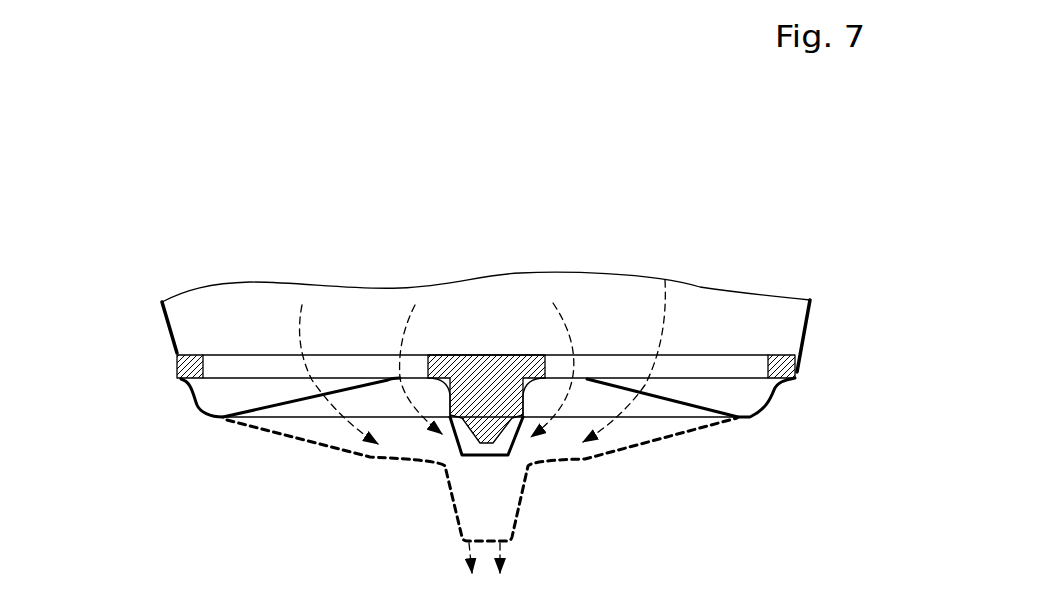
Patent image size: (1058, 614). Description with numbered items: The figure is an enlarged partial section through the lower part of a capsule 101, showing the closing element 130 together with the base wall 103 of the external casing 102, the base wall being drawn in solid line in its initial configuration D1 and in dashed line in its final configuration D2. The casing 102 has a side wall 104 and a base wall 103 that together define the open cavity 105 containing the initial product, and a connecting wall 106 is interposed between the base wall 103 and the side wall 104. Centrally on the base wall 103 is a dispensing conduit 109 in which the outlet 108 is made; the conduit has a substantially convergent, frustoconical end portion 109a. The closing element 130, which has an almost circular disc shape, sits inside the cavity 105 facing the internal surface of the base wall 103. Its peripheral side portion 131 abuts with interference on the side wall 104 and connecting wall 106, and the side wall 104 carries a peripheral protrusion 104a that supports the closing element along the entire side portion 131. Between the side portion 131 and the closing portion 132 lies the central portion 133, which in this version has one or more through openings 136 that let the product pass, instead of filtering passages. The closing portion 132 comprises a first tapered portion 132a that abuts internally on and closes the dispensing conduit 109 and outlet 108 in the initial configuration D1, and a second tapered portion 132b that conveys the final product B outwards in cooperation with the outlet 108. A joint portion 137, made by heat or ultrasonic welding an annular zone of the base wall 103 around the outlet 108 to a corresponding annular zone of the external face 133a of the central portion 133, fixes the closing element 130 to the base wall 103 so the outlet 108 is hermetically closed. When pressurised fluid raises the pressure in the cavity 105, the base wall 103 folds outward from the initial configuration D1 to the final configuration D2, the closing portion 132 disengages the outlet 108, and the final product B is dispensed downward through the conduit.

The capsule 101 is at (222, 232).
The external casing 102 is at (788, 412).
The base wall 103 is at (290, 398).
The side wall 104 is at (170, 338).
The peripheral protrusion 104a is at (177, 380).
The cavity 105 is at (243, 330).
The connecting wall 106 is at (203, 405).
The outlet 108 is at (477, 456).
The dispensing conduit 109 is at (447, 398).
The end portion 109a is at (413, 388).
The closing element 130 is at (307, 342).
The peripheral side portion 131 is at (798, 374).
The closing portion 132 is at (485, 400).
The first tapered portion 132a is at (527, 433).
The second tapered portion 132b is at (525, 400).
The central portion 133 is at (567, 355).
The external face 133a is at (712, 379).
The through openings 136 is at (682, 360).
The joint portion 137 is at (460, 443).
The initial configuration D1 is at (197, 465).
The final configuration D2 is at (198, 497).
The final product B is at (460, 562).